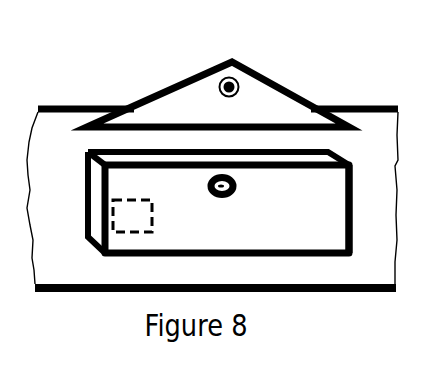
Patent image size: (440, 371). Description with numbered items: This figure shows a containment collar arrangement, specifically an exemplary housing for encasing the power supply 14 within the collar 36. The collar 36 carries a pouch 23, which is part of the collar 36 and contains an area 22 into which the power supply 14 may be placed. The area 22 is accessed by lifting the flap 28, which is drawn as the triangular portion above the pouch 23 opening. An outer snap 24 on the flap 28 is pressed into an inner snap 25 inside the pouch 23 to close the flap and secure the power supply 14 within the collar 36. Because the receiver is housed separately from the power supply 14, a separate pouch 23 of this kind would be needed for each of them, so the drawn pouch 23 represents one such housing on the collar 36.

The power supply 14 is at (153, 217).
The area 22 is at (106, 158).
The pouch 23 is at (326, 196).
The outer snap 24 is at (221, 80).
The inner snap 25 is at (233, 193).
The flap 28 is at (254, 103).
The collar 36 is at (388, 117).